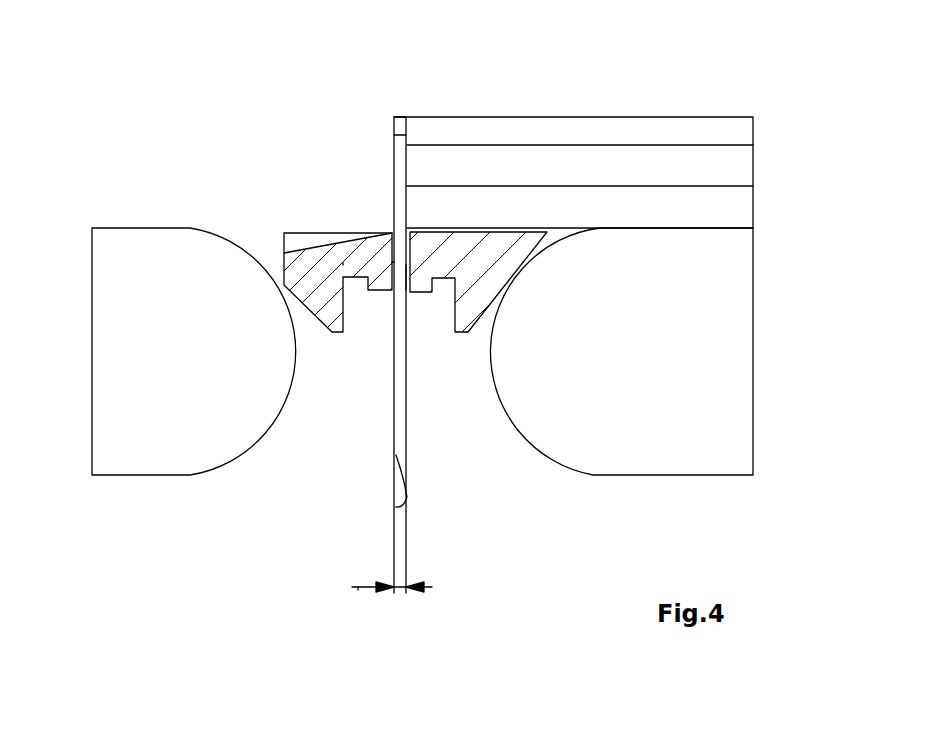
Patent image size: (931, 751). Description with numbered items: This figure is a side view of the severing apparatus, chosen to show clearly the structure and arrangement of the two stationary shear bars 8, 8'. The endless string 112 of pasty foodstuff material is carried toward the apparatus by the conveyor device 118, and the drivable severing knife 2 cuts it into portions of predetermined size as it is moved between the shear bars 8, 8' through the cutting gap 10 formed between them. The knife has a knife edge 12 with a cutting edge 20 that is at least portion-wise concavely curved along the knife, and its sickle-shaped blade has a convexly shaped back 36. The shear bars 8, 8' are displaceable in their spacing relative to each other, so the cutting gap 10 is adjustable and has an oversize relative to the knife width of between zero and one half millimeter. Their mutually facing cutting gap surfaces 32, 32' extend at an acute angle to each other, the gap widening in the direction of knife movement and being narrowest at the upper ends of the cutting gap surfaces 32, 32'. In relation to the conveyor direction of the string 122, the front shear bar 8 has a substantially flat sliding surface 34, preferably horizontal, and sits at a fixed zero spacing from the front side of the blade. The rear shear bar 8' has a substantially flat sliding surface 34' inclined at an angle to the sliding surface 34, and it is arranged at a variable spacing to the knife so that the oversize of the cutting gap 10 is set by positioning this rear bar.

The severing knife 2 is at (397, 170).
The front shear bar 8 is at (580, 144).
The rear shear bar 8' is at (318, 169).
The cutting gap 10 is at (358, 589).
The knife edge 12 is at (397, 462).
The cutting edge 20 is at (408, 498).
The cutting gap surface 32 is at (433, 354).
The cutting gap surface 32' is at (366, 169).
The sliding surface 34 is at (465, 201).
The sliding surface 34' is at (325, 224).
The back of knife blade 36 is at (400, 128).
The endless string 112 is at (552, 165).
The conveyor device 118 is at (707, 495).
The string 122 is at (127, 513).